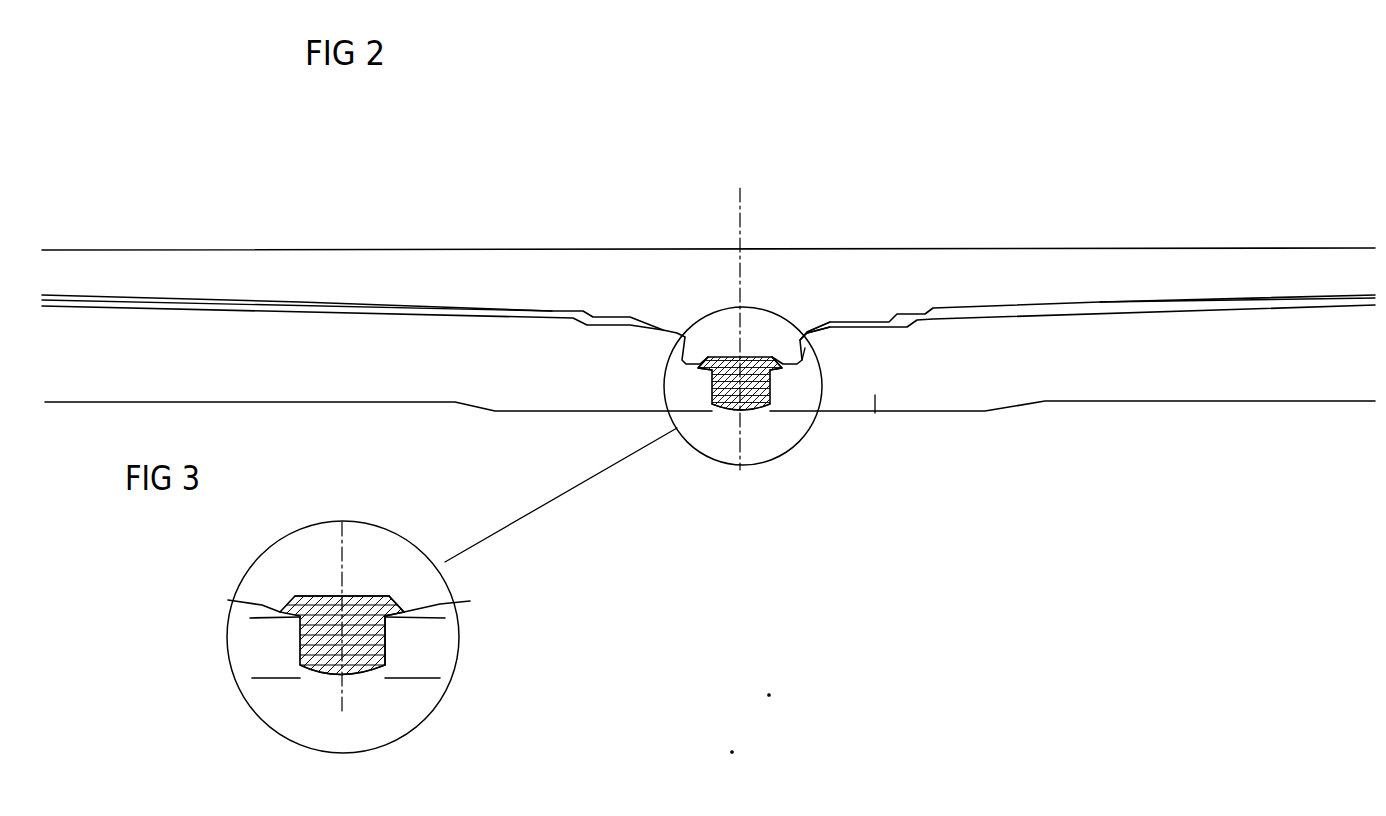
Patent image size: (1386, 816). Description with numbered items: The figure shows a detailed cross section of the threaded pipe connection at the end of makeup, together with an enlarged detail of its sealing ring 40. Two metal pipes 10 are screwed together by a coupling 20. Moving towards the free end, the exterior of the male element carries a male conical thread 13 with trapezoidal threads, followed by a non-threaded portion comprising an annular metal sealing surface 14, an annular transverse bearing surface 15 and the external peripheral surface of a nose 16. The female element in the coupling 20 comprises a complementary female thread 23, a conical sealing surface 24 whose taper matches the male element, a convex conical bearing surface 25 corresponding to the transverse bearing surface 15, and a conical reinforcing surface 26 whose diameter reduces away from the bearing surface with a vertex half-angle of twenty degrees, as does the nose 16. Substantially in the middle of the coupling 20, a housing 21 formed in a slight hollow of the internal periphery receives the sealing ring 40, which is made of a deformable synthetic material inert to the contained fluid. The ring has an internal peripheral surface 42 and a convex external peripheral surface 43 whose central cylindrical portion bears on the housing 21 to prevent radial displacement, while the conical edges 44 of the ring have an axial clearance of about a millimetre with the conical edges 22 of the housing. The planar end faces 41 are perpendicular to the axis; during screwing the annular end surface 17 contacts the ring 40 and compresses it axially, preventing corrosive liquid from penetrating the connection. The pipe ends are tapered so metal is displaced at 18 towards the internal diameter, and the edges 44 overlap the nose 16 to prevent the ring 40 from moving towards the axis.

In FIG. 2, the metal pipe 10 is at (245, 338).
In FIG. 2, the male conical thread 13 is at (1085, 312).
In FIG. 2, the annular metal sealing surface 14 is at (818, 355).
In FIG. 2, the annular transverse bearing surface 15 is at (797, 355).
In FIG. 2, the nose 16 is at (795, 397).
In FIG. 3, the nose 16 is at (410, 653).
In FIG. 2, the annular end surface 17 is at (750, 407).
In FIG. 3, the annular end surface 17 is at (358, 594).
In FIG. 2, the displaced metal region 18 is at (875, 413).
In FIG. 2, the coupling 20 is at (541, 262).
In FIG. 3, the housing 21 is at (412, 675).
In FIG. 3, the housing edge 22 is at (400, 598).
In FIG. 2, the female thread 23 is at (917, 312).
In FIG. 2, the conical sealing surface 24 is at (823, 330).
In FIG. 2, the convex conical bearing surface 25 is at (838, 345).
In FIG. 2, the conical reinforcing surface 26 is at (805, 348).
In FIG. 2, the sealing ring 40 is at (728, 405).
In FIG. 3, the sealing ring 40 is at (330, 685).
In FIG. 3, the end face 41 is at (388, 633).
In FIG. 3, the internal peripheral surface 42 is at (350, 682).
In FIG. 3, the external peripheral surface 43 is at (316, 594).
In FIG. 3, the edge 44 is at (382, 594).